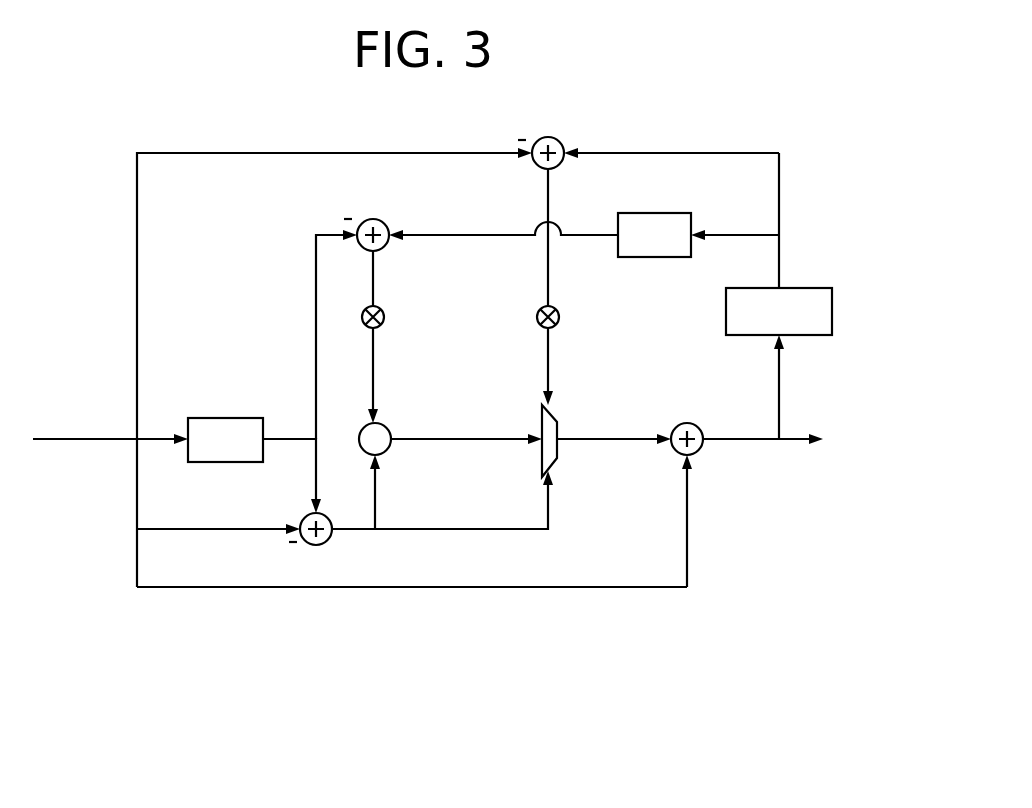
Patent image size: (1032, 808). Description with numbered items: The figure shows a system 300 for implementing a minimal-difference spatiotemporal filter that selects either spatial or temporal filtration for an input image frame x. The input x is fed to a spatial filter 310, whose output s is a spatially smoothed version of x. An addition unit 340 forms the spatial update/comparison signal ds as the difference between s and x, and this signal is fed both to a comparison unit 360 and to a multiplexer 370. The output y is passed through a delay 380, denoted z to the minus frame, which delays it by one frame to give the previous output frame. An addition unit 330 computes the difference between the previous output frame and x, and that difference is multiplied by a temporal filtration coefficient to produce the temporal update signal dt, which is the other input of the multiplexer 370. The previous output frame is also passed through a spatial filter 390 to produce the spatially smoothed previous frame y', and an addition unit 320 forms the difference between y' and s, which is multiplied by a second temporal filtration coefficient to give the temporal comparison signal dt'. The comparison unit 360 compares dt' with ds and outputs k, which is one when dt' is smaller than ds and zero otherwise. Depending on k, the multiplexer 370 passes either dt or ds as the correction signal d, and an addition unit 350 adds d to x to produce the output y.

The system 300 is at (352, 652).
The spatial filter 310 is at (232, 418).
The addition unit 320 is at (385, 223).
The addition unit 330 is at (558, 138).
The addition unit 340 is at (328, 540).
The addition unit 350 is at (699, 450).
The comparison unit 360 is at (390, 450).
The multiplexer 370 is at (560, 455).
The delay 380 is at (832, 312).
The spatial filter 390 is at (652, 213).